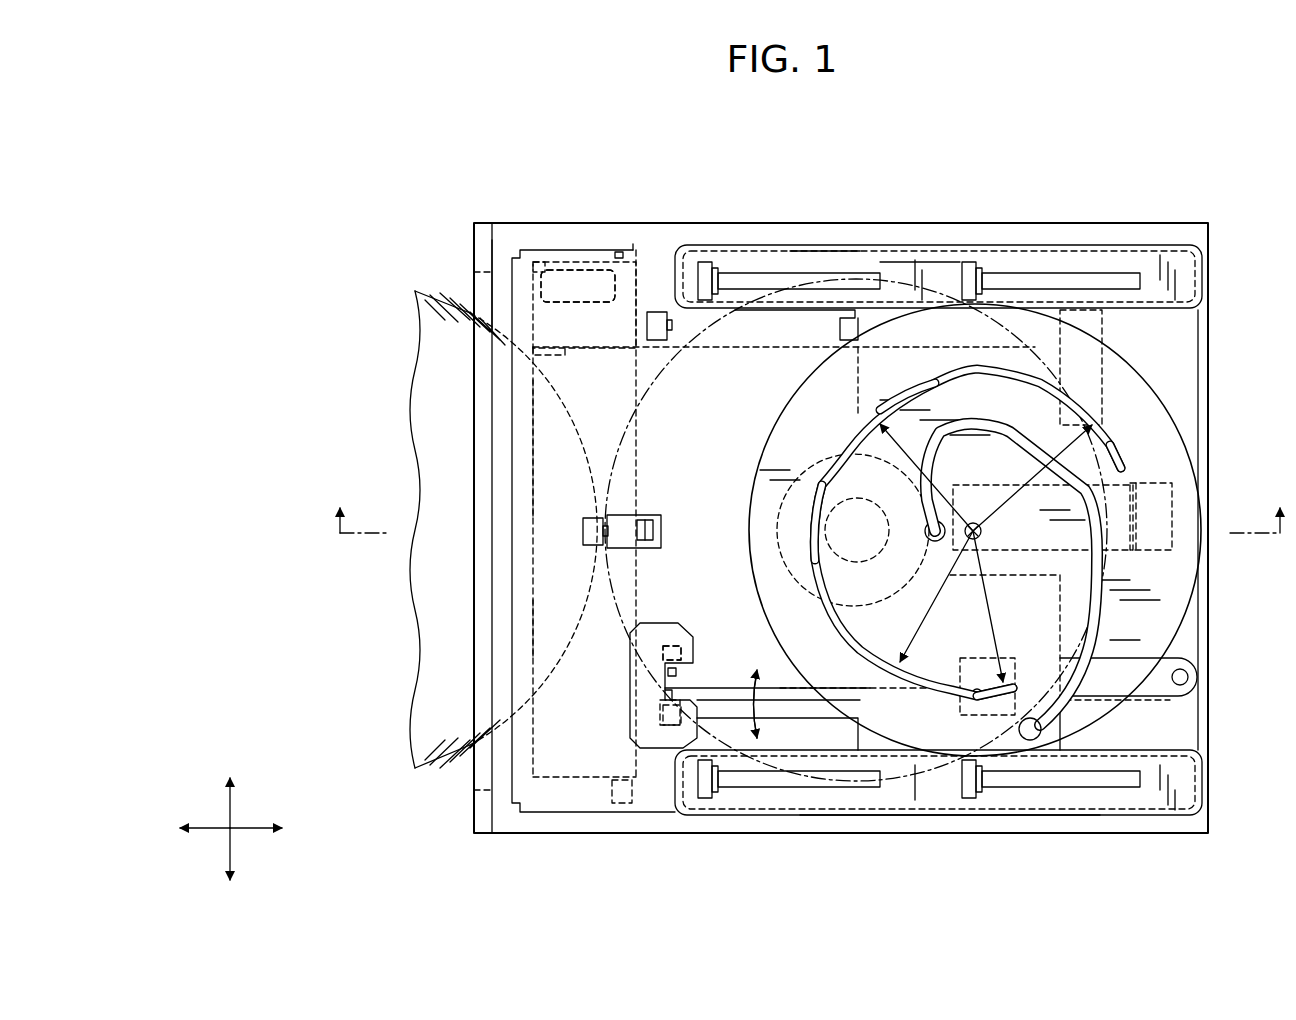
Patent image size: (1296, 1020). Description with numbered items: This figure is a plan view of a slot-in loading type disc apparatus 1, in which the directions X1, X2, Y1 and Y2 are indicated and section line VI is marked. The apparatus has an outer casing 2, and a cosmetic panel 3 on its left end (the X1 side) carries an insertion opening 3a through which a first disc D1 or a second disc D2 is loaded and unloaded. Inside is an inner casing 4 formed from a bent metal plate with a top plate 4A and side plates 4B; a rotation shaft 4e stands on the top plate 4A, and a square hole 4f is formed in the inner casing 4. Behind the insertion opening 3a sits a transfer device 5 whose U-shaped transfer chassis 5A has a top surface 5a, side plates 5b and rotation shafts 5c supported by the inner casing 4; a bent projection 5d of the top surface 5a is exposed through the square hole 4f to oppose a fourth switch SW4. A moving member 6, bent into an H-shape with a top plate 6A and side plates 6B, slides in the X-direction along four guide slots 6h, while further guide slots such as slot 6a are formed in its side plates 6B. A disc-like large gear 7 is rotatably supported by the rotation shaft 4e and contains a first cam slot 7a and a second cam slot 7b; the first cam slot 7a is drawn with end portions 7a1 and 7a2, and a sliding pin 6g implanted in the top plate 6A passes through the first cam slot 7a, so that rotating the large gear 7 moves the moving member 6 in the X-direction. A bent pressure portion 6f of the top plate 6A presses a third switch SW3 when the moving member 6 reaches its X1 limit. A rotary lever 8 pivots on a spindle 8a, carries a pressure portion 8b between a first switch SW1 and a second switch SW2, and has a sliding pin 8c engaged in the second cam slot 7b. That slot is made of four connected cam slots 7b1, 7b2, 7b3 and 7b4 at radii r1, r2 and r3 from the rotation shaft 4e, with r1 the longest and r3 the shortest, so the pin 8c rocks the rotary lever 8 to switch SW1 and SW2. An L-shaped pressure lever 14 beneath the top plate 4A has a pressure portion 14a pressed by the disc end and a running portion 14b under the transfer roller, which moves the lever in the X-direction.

The disc apparatus 1 is at (993, 220).
The outer casing 2 is at (703, 222).
The cosmetic panel 3 is at (482, 283).
The insertion opening 3a is at (485, 665).
The inner casing 4 is at (612, 880).
The top plate 4A is at (548, 800).
The side plates 4B is at (612, 250).
The rotation shaft 4e is at (980, 536).
The square hole 4f is at (645, 515).
The transfer device 5 is at (528, 460).
The transfer chassis 5A is at (530, 395).
The top surface 5a is at (560, 636).
The side plates 5b is at (535, 265).
The rotation shafts 5c is at (620, 262).
The projection 5d is at (655, 532).
The moving member 6 is at (935, 243).
The top plate 6A is at (885, 262).
The side plates 6B is at (818, 245).
The guide slot 6a is at (935, 818).
The pressure portion 6f is at (838, 328).
The sliding pin 6g is at (928, 528).
The guide slots 6h is at (775, 280).
The large gear 7 is at (1150, 380).
The first cam slot 7a is at (1088, 652).
The lever pivot hole 7a1 is at (905, 555).
The lever end pin 7a2 is at (1045, 732).
The second cam slot 7b is at (930, 672).
The cam slot 7b1 is at (1010, 684).
The cam slot 7b2 is at (818, 570).
The cam slot 7b3 is at (880, 398).
The cam slot 7b4 is at (1124, 472).
The rotary lever 8 is at (740, 686).
The spindle 8a is at (1185, 685).
The pressure portion 8b is at (672, 690).
The sliding pin 8c is at (975, 688).
The pressure lever 14 is at (1105, 330).
The pressure portion 14a is at (1150, 500).
The running portion 14b is at (575, 270).
The first switch SW1 is at (668, 712).
The second switch SW2 is at (675, 640).
The third switch SW3 is at (648, 325).
The fourth switch SW4 is at (590, 530).
The first disc D1 is at (613, 478).
The second disc D2 is at (440, 290).
The radius r1 is at (994, 606).
The radius r2 is at (990, 543).
The radius r3 is at (926, 473).
The section line VI is at (805, 536).
The X1 direction X1 is at (188, 828).
The X2 direction X2 is at (273, 828).
The Y1 direction Y1 is at (230, 788).
The Y2 direction Y2 is at (230, 868).